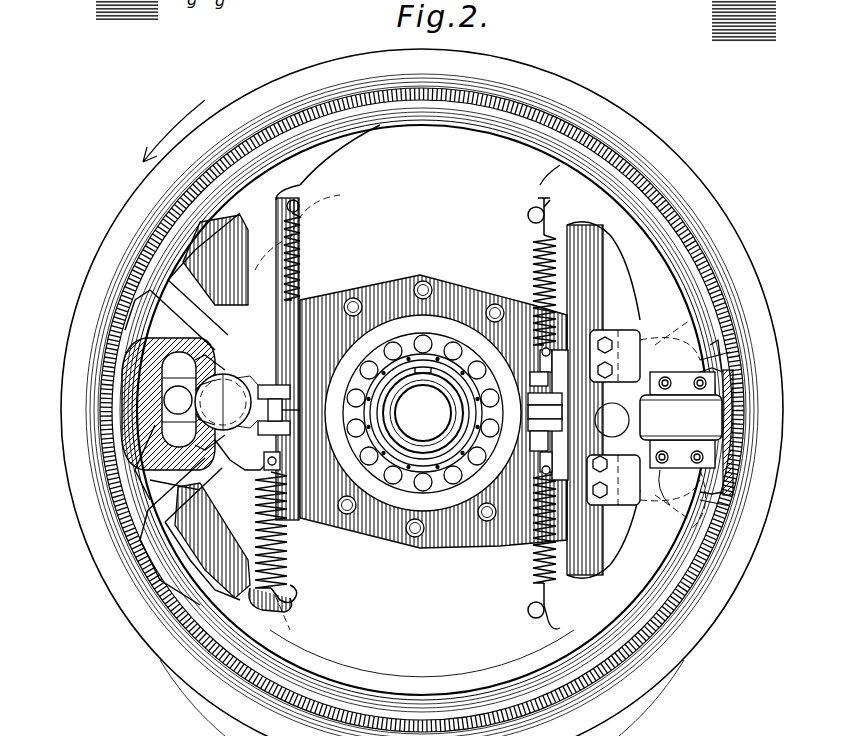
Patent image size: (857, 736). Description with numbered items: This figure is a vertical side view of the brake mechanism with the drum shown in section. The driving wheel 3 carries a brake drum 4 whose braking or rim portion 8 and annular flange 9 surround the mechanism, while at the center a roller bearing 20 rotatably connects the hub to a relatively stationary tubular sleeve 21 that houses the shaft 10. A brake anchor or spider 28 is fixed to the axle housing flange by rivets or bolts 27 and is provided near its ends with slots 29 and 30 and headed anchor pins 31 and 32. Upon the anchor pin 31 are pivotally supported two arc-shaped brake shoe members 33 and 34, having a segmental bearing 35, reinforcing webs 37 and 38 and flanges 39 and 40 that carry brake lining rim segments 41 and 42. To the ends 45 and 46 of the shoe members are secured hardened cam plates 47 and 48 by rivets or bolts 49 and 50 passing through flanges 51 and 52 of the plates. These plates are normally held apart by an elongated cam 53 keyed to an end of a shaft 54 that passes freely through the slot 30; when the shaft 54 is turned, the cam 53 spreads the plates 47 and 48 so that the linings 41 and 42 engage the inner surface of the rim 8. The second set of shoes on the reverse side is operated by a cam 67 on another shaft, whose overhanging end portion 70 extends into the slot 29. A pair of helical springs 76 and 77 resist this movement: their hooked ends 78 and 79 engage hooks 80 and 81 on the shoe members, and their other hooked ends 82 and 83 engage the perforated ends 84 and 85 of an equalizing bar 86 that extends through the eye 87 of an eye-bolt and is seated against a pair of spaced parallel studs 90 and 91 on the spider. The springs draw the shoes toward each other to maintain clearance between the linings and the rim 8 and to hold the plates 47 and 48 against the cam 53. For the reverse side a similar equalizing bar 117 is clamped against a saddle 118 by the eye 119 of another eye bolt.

The driving wheel 3 is at (230, 392).
The brake drum 4 is at (422, 405).
The braking or rim portion 8 is at (640, 183).
The annular flange 9 is at (612, 112).
The shaft 10 is at (423, 413).
The roller bearing 20 is at (410, 472).
The tubular sleeve 21 is at (442, 440).
The rivets or bolts 27 is at (414, 290).
The brake anchor or spider 28 is at (372, 290).
The slot 29 is at (185, 442).
The slot 30 is at (735, 450).
The anchor pin 31 is at (235, 402).
The anchor pin 32 is at (670, 495).
The brake shoe member 33 is at (140, 320).
The brake shoe member 34 is at (185, 452).
The segmental bearing 35 is at (240, 372).
The reinforcing web 37 is at (300, 258).
The reinforcing web 38 is at (298, 636).
The flange 39 is at (415, 120).
The flange 40 is at (342, 692).
The brake lining rim segment 41 is at (488, 118).
The brake lining rim segment 42 is at (412, 712).
The end of shoe member 45 is at (712, 355).
The end of shoe member 46 is at (712, 480).
The cam plate 47 is at (715, 380).
The cam plate 48 is at (722, 465).
The rivets or bolts 49 is at (645, 348).
The rivets or bolts 50 is at (700, 500).
The flange of cam plate 51 is at (682, 371).
The flange of cam plate 52 is at (651, 472).
The elongated cam 53 is at (724, 412).
The shaft 54 is at (724, 400).
The cam 67 is at (100, 350).
The overhanging end portion 70 is at (100, 372).
The helical spring 76 is at (535, 265).
The helical spring 77 is at (532, 566).
The hooked end 78 is at (540, 200).
The hooked end 79 is at (538, 605).
The hook 80 is at (528, 216).
The hook 81 is at (528, 614).
The hooked end 82 is at (540, 358).
The hooked end 83 is at (540, 470).
The perforated end 84 is at (540, 366).
The perforated end 85 is at (540, 455).
The equalizing bar 86 is at (530, 380).
The eye 87 is at (528, 412).
The stud 90 is at (528, 398).
The stud 91 is at (528, 426).
The equalizing bar 117 is at (223, 402).
The saddle 118 is at (292, 392).
The eye 119 is at (300, 410).